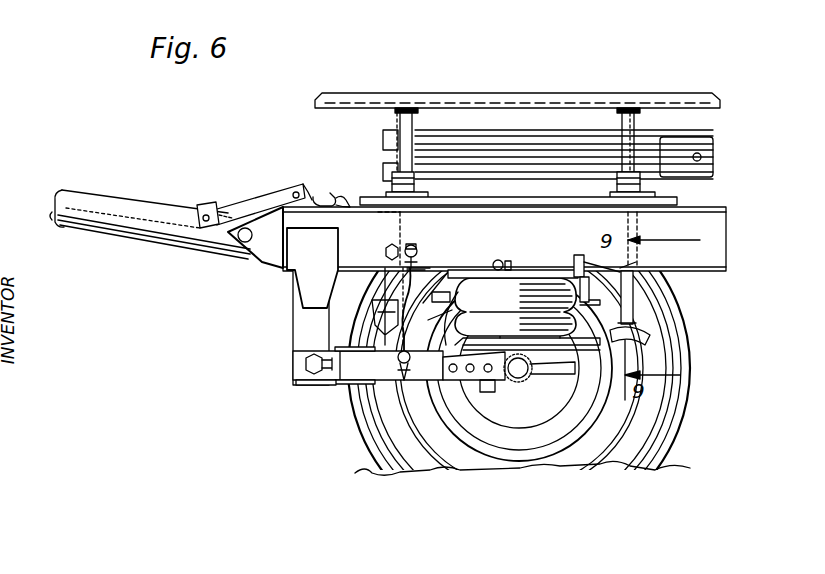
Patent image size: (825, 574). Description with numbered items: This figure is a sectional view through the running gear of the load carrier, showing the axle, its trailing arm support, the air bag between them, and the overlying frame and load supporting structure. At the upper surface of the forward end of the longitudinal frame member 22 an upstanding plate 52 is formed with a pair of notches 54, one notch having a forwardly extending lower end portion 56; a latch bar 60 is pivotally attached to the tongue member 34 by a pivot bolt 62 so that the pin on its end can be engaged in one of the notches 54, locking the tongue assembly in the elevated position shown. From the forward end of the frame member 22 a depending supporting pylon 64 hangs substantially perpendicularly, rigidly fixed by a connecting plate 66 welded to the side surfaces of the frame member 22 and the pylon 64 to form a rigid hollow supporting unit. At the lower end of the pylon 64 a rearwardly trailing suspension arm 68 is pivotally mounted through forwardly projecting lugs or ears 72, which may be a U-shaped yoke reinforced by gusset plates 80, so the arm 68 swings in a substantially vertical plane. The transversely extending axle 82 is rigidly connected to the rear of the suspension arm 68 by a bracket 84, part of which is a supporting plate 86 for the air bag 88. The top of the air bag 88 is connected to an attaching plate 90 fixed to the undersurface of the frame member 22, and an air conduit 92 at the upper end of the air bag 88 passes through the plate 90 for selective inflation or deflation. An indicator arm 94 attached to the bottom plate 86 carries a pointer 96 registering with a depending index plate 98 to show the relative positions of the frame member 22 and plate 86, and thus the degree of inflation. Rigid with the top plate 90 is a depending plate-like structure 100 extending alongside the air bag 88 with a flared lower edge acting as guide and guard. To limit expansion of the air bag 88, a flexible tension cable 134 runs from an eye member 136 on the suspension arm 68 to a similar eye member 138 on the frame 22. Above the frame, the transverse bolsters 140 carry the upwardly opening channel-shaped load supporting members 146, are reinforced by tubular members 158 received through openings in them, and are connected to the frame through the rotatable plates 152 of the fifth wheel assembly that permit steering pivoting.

The longitudinal frame member 22 is at (722, 226).
The member 34 is at (73, 195).
The upstanding plate 52 is at (308, 188).
The notches 54 is at (320, 196).
The forwardly extending lower end portion 56 is at (345, 200).
The latch bar 60 is at (250, 206).
The pivot bolt 62 is at (206, 211).
The depending supporting pylon 64 is at (300, 322).
The connecting plate 66 is at (300, 290).
The trailing suspension arm 68 is at (368, 365).
The forwardly projecting lugs or ears 72 is at (302, 360).
The gusset plates 80 is at (340, 383).
The axle 82 is at (527, 380).
The bracket 84 is at (568, 362).
The supporting plate 86 is at (565, 358).
The air bag 88 is at (511, 311).
The attaching bracket or plate 90 is at (482, 270).
The air conduit 92 is at (542, 270).
The indicator arm 94 is at (665, 350).
The pointer 96 is at (650, 334).
The index plate 98 is at (636, 300).
The depending plate-like structure 100 is at (636, 262).
The flexible tension line or cable 134 is at (426, 278).
The eye member 136 is at (410, 372).
The eye member 138 is at (424, 248).
The transverse frame members or bolsters 140 is at (396, 112).
The channel-shaped load supporting member 146 is at (653, 102).
The rotatable plates 152 is at (677, 204).
The tubular members 158 is at (542, 154).